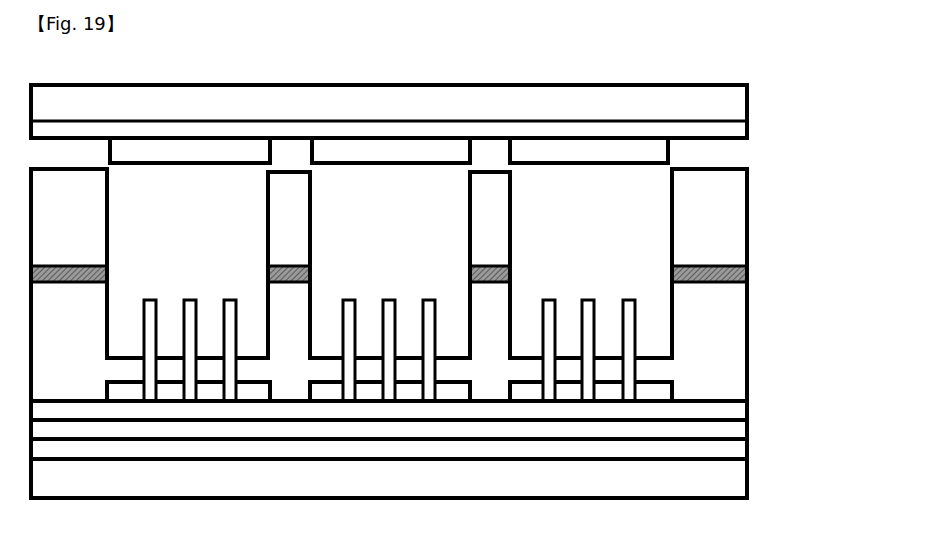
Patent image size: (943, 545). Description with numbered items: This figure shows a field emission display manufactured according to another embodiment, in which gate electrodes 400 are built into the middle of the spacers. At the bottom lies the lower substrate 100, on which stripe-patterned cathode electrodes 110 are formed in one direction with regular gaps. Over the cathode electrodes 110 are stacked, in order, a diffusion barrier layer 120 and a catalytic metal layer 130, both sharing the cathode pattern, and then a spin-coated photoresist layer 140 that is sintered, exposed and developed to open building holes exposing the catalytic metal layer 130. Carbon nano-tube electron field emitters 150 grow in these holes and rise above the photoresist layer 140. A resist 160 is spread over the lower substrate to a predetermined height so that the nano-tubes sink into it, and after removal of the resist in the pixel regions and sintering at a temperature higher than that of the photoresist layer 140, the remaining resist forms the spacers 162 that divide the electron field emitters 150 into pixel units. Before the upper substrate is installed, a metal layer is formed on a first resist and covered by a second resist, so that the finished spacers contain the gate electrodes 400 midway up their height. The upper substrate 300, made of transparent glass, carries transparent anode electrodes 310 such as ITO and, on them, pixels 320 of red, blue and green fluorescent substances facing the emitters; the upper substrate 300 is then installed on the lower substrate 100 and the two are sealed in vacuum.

The lower substrate 100 is at (740, 489).
The cathode electrodes 110 is at (745, 452).
The diffusion barrier layer 120 is at (740, 428).
The catalytic metal layer 130 is at (740, 410).
The photoresist layer 140 is at (675, 387).
The electron field emitters 150 is at (630, 323).
The resist 160 is at (710, 329).
The spacers 162 is at (502, 302).
The upper substrate 300 is at (740, 102).
The anode electrodes 310 is at (740, 128).
The pixels 320 is at (652, 153).
The gate electrodes 400 is at (308, 270).